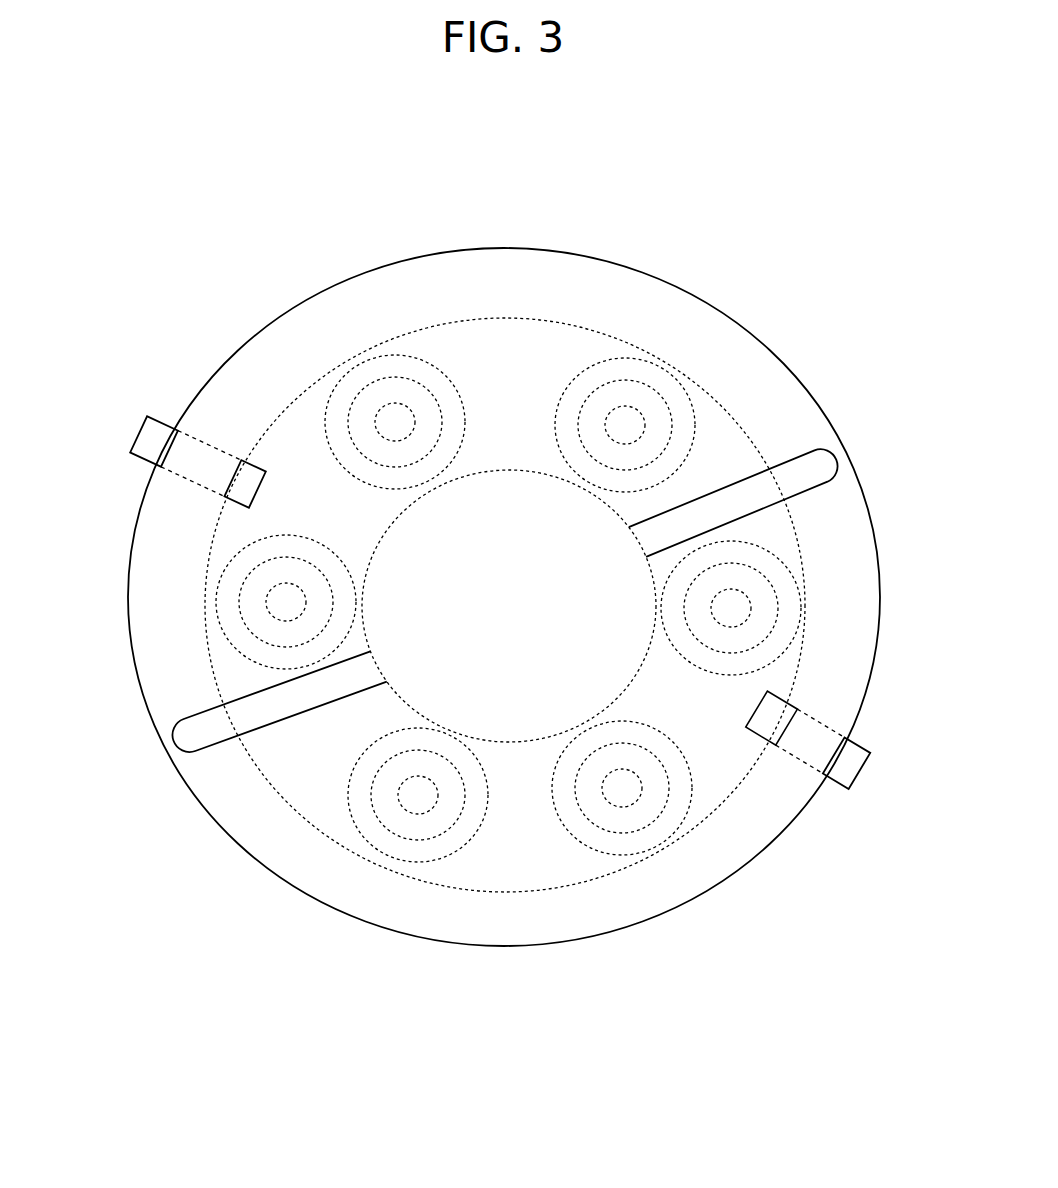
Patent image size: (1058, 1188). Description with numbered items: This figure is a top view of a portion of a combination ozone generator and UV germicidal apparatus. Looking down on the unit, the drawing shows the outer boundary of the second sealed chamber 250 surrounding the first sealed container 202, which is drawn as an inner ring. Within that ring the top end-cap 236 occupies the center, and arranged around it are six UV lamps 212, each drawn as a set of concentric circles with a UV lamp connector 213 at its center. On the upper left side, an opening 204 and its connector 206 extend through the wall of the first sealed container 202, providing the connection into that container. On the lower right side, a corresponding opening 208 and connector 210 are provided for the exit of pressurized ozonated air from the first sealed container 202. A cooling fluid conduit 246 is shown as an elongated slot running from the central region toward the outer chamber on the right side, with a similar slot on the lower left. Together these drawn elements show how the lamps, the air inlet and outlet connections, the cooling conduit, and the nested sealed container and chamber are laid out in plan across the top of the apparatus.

The first sealed container 202 is at (435, 342).
The opening 204 is at (248, 462).
The connector 206 is at (143, 427).
The opening 208 is at (787, 702).
The connector 210 is at (855, 770).
The UV lamp 212 is at (218, 590).
The UV lamp connector 213 is at (415, 417).
The top end-cap 236 is at (510, 742).
The cooling fluid conduit 246 is at (753, 497).
The second sealed chamber 250 is at (798, 420).